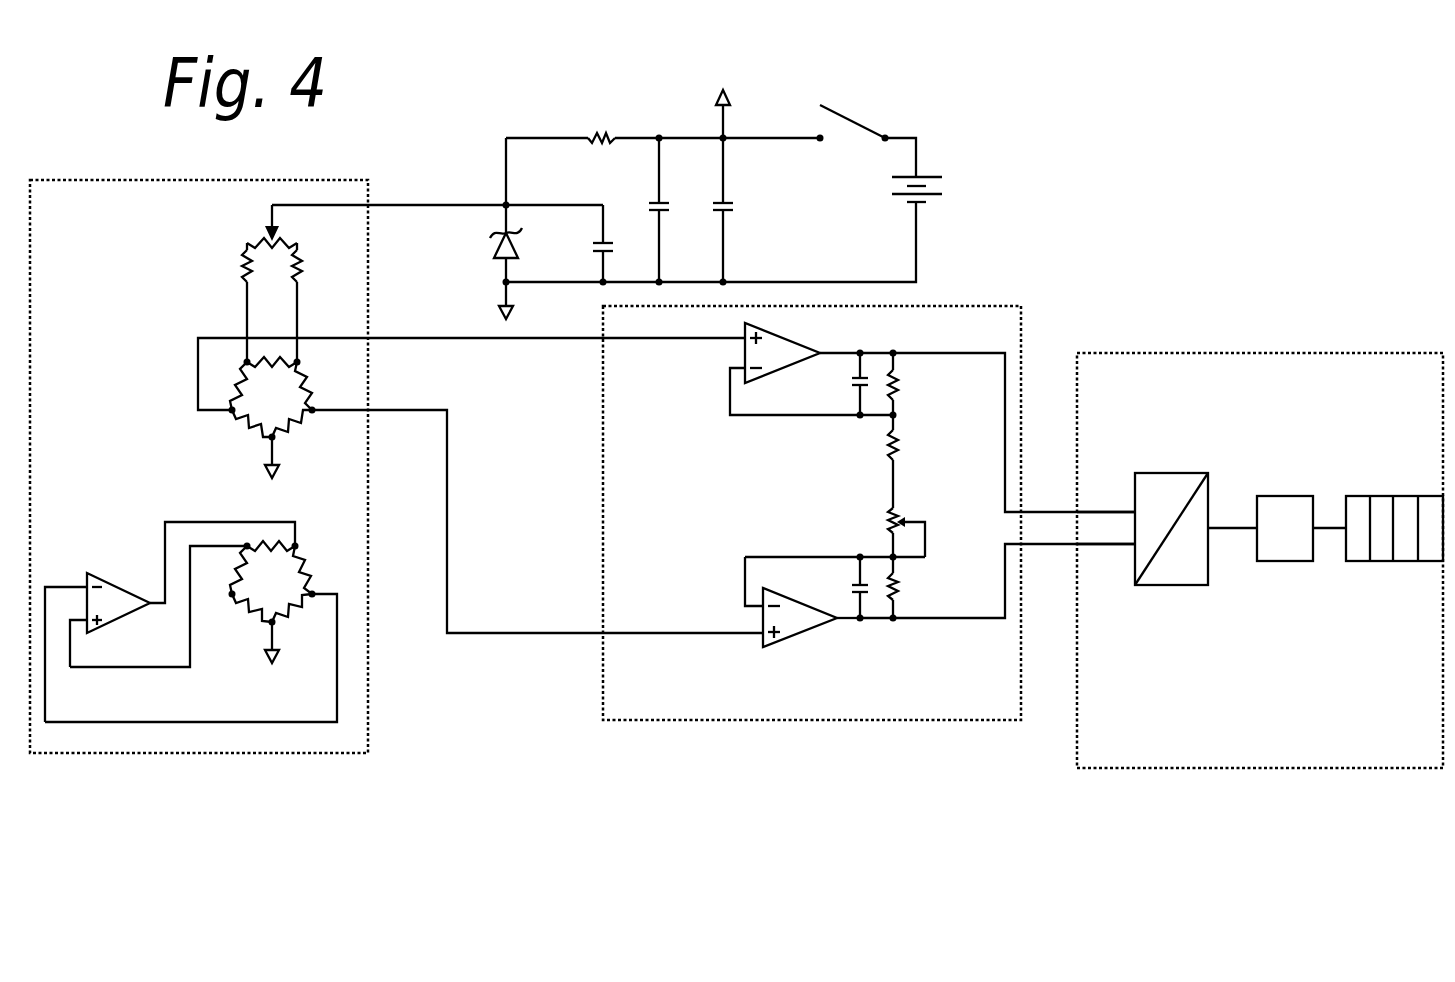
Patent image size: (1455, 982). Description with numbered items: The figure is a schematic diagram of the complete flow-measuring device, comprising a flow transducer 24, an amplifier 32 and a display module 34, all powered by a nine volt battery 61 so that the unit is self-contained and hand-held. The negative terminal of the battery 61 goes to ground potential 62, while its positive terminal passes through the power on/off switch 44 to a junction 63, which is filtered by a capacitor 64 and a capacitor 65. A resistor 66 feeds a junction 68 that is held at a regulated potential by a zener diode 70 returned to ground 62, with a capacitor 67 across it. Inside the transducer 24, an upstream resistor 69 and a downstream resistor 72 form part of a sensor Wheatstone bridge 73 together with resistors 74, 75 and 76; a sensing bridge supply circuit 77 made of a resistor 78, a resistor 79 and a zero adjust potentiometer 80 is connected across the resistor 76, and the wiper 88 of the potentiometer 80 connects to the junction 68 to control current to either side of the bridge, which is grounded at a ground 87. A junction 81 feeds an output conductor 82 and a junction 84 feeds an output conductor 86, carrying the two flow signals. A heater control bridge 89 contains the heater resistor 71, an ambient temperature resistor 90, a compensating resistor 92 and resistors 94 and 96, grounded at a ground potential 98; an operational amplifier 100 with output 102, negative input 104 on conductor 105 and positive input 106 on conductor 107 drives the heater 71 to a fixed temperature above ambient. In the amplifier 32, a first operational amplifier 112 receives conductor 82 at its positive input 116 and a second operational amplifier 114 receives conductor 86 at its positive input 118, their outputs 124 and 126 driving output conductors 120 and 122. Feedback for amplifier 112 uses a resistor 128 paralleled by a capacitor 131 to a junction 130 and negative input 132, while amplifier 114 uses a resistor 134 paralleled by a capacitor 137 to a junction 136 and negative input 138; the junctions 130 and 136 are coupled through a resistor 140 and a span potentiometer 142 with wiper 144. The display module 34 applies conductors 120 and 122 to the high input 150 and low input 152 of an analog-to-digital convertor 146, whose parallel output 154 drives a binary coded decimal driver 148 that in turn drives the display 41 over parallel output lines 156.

The flow transducer 24 is at (225, 758).
The amplifier 32 is at (822, 724).
The display module 34 is at (1248, 772).
The display 41 is at (1395, 563).
The power on/off switch 44 is at (856, 122).
The 9 volt battery 61 is at (932, 176).
The ground potential 62 is at (512, 310).
The junction 63 is at (720, 132).
The capacitor 64 is at (720, 200).
The capacitor 65 is at (656, 200).
The resistor 66 is at (592, 133).
The capacitor 67 is at (597, 250).
The junction 68 is at (503, 202).
The upstream resistor 69 is at (250, 424).
The zener diode 70 is at (492, 245).
The heater resistor 71 is at (295, 612).
The downstream resistor 72 is at (293, 424).
The sensor Wheatstone bridge 73 is at (246, 424).
The resistor 74 is at (240, 385).
The resistor 75 is at (306, 385).
The resistor 76 is at (272, 381).
The sensing bridge supply circuit 77 is at (253, 280).
The resistor 78 is at (243, 268).
The resistor 79 is at (303, 265).
The zero adjust potentiometer 80 is at (268, 237).
The junction 81 is at (230, 412).
The output conductor 82 is at (388, 337).
The junction 84 is at (314, 412).
The output conductor 86 is at (446, 548).
The ground 87 is at (276, 476).
The wiper 88 is at (276, 210).
The heater control bridge 89 is at (274, 593).
The ambient temperature resistor 90 is at (252, 612).
The resistor 92 is at (234, 572).
The resistor 94 is at (271, 566).
The resistor 96 is at (314, 572).
The ground potential 98 is at (276, 664).
The operational amplifier 100 is at (170, 604).
The output 102 is at (152, 606).
The negative input 104 is at (92, 578).
The conductor 105 is at (163, 723).
The positive input 106 is at (98, 628).
The conductor 107 is at (125, 668).
The first operational amplifier 112 is at (754, 362).
The second operational amplifier 114 is at (767, 621).
The positive input 116 is at (743, 336).
The positive input 118 is at (768, 642).
The output conductor 120 is at (1055, 510).
The output conductor 122 is at (1052, 546).
The output 124 is at (830, 348).
The output 126 is at (840, 624).
The resistor 128 is at (900, 385).
The junction 130 is at (896, 416).
The capacitor 131 is at (855, 386).
The negative input 132 is at (756, 372).
The resistor 134 is at (900, 588).
The junction 136 is at (905, 515).
The capacitor 137 is at (856, 587).
The negative input 138 is at (770, 600).
The resistor 140 is at (884, 442).
The span potentiometer 142 is at (900, 508).
The wiper 144 is at (928, 525).
The analog-to-digital convertor 146 is at (1170, 592).
The binary coded decimal driver 148 is at (1287, 568).
The high input 150 is at (1110, 510).
The low input 152 is at (1105, 546).
The output 154 is at (1232, 526).
The parallel output lines 156 is at (1330, 526).